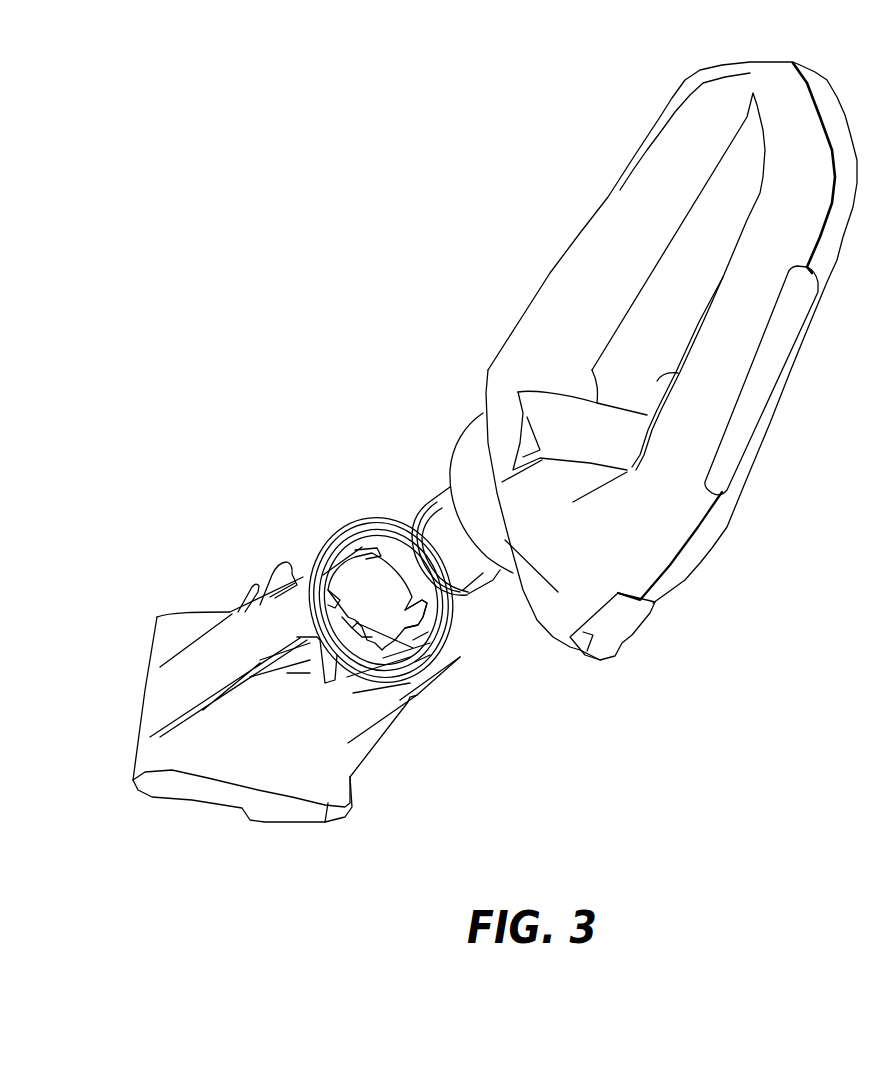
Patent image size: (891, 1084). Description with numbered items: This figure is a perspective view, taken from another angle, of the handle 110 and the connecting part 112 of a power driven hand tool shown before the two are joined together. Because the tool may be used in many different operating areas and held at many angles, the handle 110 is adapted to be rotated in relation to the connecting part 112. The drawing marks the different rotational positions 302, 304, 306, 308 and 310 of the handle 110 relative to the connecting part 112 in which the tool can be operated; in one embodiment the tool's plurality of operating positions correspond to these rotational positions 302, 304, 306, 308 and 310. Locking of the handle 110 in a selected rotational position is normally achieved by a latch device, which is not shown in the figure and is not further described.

The handle 110 is at (793, 375).
The connecting part 112 is at (243, 823).
The rotational position 302 is at (423, 610).
The rotational position 304 is at (413, 640).
The rotational position 306 is at (405, 673).
The rotational position 308 is at (423, 663).
The rotational position 310 is at (310, 578).